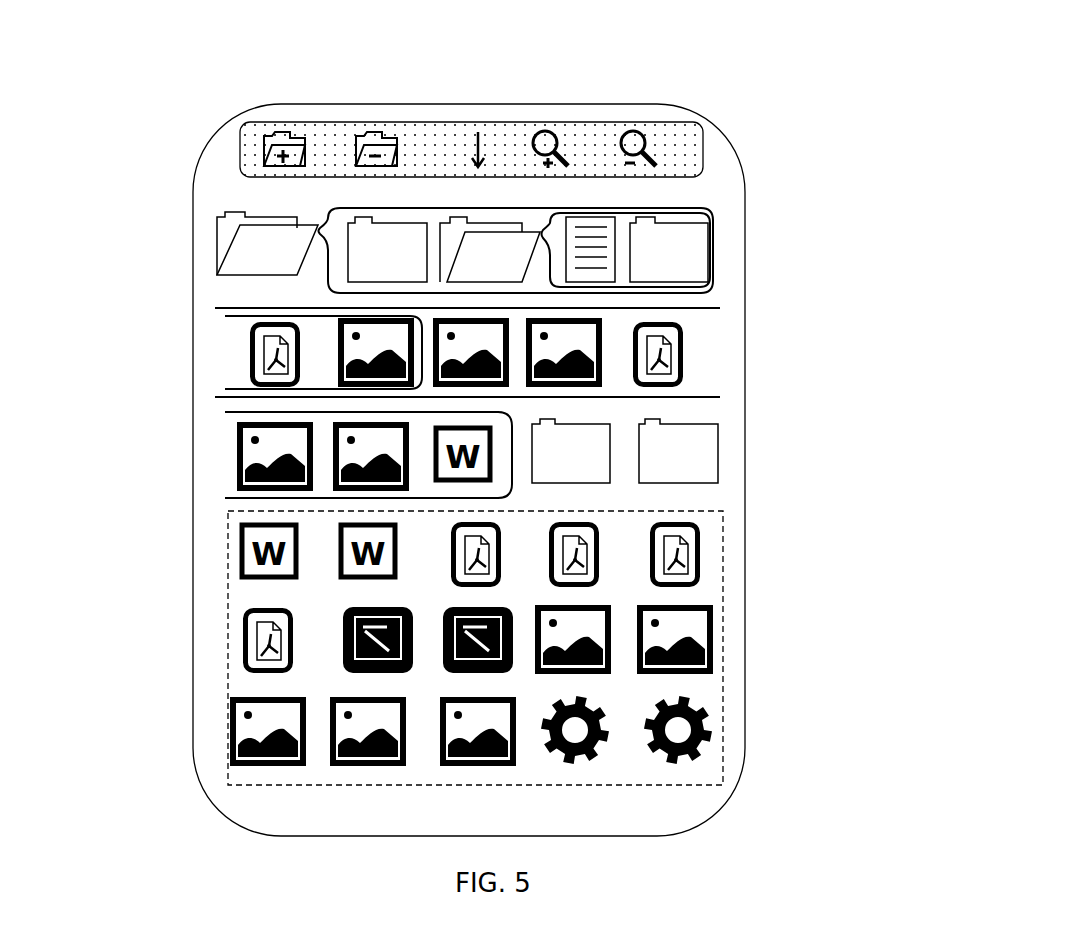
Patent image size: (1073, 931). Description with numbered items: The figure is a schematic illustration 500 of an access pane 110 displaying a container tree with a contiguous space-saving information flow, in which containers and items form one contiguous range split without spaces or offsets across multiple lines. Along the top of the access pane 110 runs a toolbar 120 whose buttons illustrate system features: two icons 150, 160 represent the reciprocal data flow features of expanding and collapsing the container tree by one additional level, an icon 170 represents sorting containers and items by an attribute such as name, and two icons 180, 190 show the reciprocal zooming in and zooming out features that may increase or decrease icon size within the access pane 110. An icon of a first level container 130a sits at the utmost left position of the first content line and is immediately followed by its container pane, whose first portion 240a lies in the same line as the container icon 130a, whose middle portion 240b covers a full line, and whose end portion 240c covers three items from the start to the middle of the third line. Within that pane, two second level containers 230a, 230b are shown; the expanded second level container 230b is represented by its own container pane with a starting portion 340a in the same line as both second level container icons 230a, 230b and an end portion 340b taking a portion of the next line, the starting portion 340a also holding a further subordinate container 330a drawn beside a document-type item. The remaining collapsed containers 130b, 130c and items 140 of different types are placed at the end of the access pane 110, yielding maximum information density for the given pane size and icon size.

The access pane 110 is at (469, 470).
The toolbar 120 is at (471, 149).
The first level container 130a is at (267, 243).
The container 130b is at (571, 451).
The container 130c is at (678, 451).
The items 140 is at (718, 657).
The icon 150 is at (270, 128).
The icon 160 is at (372, 128).
The icon 170 is at (470, 130).
The icon 180 is at (560, 135).
The icon 190 is at (648, 135).
The second level container 230a is at (387, 249).
The second level container 230b is at (490, 249).
The first portion of container pane 240a is at (705, 198).
The middle portion of container pane 240b is at (230, 308).
The end portion of container pane 240c is at (230, 425).
The nested subfolder 330a is at (669, 249).
The starting portion of container pane 340a is at (714, 283).
The end portion of container pane 340b is at (230, 322).
The schematic illustration 500 is at (993, 127).